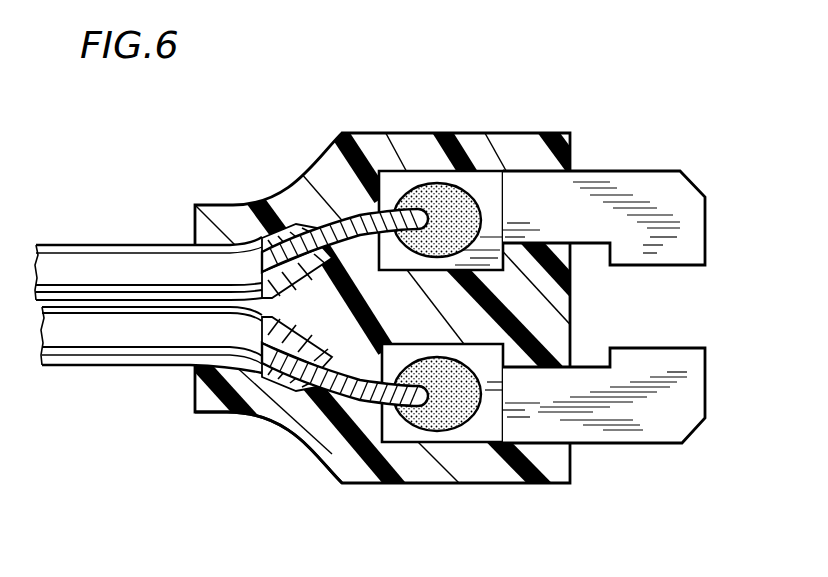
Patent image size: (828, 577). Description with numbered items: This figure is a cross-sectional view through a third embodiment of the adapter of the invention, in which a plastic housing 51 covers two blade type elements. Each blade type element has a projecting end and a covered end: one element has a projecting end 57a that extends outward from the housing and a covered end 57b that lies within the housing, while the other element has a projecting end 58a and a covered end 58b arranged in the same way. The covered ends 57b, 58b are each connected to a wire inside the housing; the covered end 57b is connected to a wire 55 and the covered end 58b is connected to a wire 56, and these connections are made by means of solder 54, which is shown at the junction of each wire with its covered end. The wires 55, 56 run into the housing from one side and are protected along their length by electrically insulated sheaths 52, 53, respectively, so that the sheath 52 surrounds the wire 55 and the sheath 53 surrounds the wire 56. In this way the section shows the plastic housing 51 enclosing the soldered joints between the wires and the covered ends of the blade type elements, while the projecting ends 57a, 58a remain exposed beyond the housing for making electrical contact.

The plastic housing 51 is at (233, 213).
The electrically insulated sheath 52 is at (110, 272).
The electrically insulated sheath 53 is at (112, 325).
The solder 54 is at (447, 203).
The wire 55 is at (357, 230).
The wire 56 is at (328, 413).
The projecting end 57a is at (645, 197).
The covered end 57b is at (397, 185).
The projecting end 58a is at (675, 412).
The covered end 58b is at (410, 427).